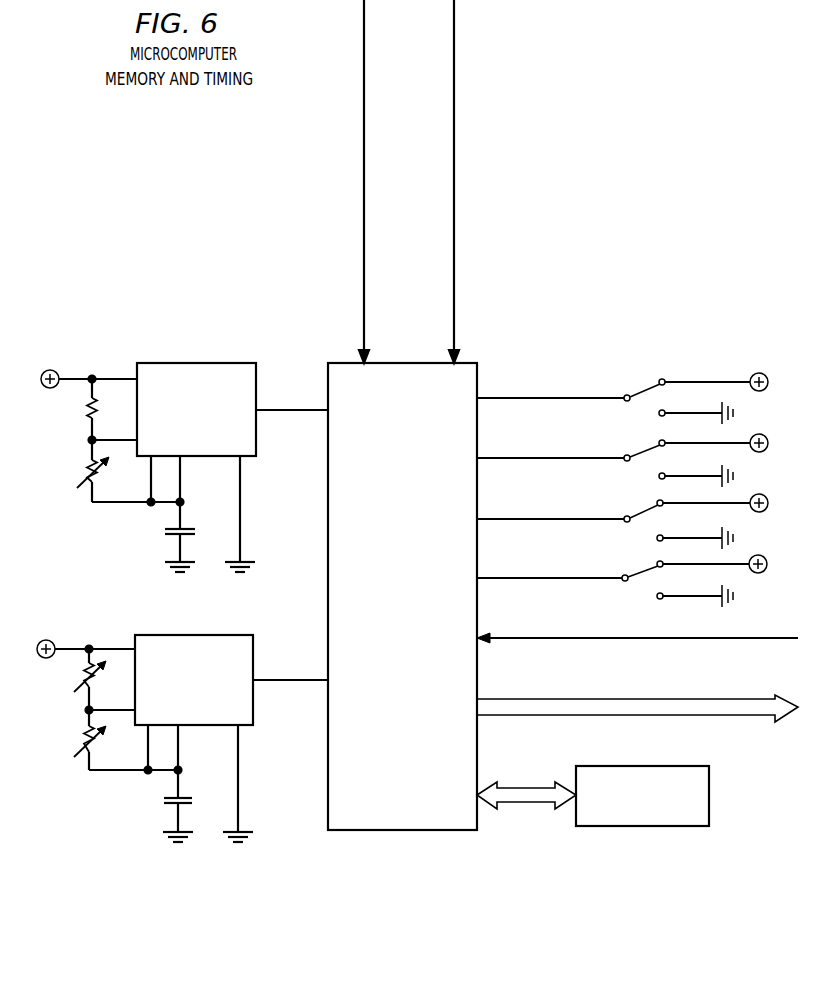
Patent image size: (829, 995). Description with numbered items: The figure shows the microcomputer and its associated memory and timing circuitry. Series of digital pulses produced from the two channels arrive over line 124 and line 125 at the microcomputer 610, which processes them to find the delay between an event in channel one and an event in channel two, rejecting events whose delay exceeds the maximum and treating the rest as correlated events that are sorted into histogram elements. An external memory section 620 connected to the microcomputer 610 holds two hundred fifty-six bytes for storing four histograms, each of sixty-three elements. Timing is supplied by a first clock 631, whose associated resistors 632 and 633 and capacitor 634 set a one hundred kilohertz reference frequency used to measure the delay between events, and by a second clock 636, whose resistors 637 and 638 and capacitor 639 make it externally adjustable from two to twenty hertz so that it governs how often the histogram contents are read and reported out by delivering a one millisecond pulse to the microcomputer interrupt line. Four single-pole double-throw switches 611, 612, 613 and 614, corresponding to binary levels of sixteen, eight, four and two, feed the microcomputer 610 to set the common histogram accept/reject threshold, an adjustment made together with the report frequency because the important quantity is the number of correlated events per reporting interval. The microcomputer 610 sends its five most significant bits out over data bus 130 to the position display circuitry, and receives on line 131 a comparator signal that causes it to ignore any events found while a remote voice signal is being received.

The line 124 is at (364, 136).
The line 125 is at (454, 143).
The data bus 130 is at (513, 699).
The line 131 is at (513, 638).
The microcomputer 610 is at (468, 362).
The single-pole double-throw switch 611 is at (517, 397).
The single-pole double-throw switch 612 is at (517, 458).
The single-pole double-throw switch 613 is at (517, 519).
The single-pole double-throw switch 614 is at (517, 578).
The external memory section 620 is at (671, 766).
The first clock 631 is at (216, 363).
The resistor 632 is at (77, 407).
The resistor 633 is at (83, 472).
The capacitor 634 is at (166, 531).
The second clock 636 is at (219, 635).
The resistor 637 is at (79, 676).
The resistor 638 is at (79, 741).
The capacitor 639 is at (164, 801).